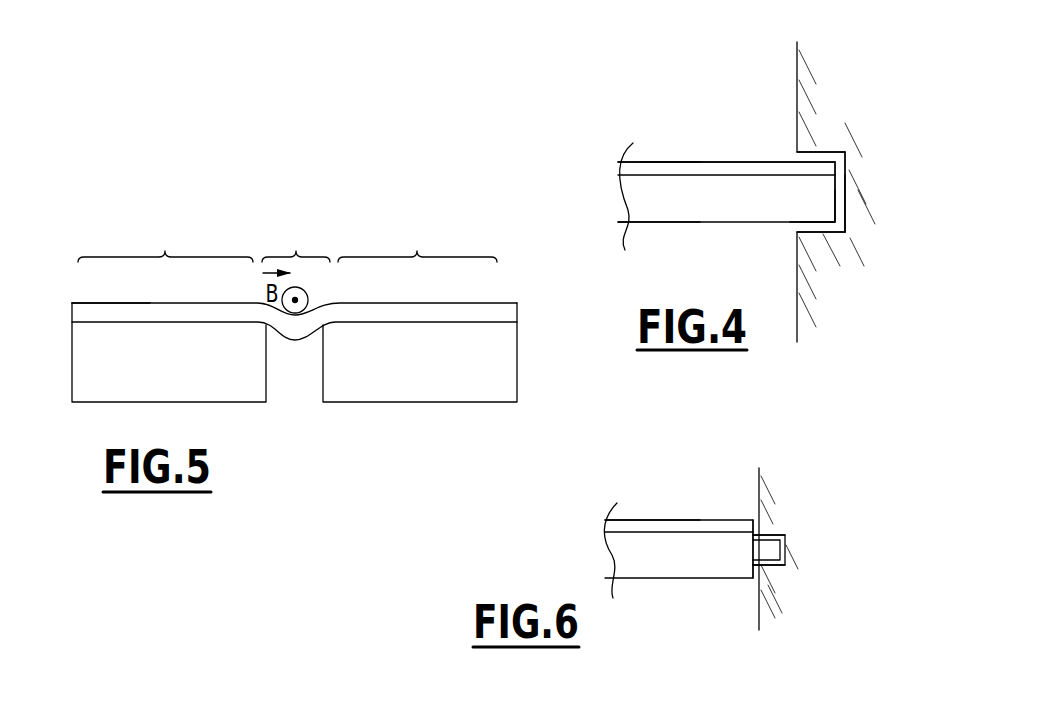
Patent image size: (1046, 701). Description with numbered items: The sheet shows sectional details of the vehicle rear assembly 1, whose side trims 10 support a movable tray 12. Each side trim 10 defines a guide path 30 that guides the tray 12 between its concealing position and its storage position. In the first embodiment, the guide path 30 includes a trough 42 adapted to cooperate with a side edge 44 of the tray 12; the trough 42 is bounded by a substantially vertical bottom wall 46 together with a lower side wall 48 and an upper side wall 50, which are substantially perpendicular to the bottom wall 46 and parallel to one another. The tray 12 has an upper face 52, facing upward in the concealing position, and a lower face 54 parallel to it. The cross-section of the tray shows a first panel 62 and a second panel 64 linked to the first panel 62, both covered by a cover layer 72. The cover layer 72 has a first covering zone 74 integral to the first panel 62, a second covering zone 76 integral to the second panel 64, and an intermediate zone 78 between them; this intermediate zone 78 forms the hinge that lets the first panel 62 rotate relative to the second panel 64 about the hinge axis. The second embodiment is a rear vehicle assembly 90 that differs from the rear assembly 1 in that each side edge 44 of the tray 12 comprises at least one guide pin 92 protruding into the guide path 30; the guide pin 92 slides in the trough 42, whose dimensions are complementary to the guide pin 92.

In FIG. 4, the rear assembly 1 is at (640, 100).
In FIG. 5, the rear assembly 1 is at (88, 232).
In FIG. 4, the side trim 10 is at (810, 88).
In FIG. 6, the side trim 10 is at (765, 498).
In FIG. 4, the tray 12 is at (668, 188).
In FIG. 6, the tray 12 is at (663, 553).
In FIG. 4, the guide path 30 is at (778, 231).
In FIG. 6, the guide path 30 is at (745, 588).
In FIG. 4, the trough 42 is at (848, 173).
In FIG. 6, the trough 42 is at (770, 530).
In FIG. 4, the side edge 44 is at (833, 193).
In FIG. 6, the side edge 44 is at (762, 573).
In FIG. 4, the bottom wall 46 is at (848, 192).
In FIG. 4, the lower side wall 48 is at (834, 233).
In FIG. 4, the upper side wall 50 is at (820, 150).
In FIG. 4, the upper face 52 is at (698, 161).
In FIG. 4, the lower face 54 is at (658, 222).
In FIG. 5, the first panel 62 is at (158, 360).
In FIG. 5, the second panel 64 is at (463, 363).
In FIG. 5, the cover layer 72 is at (463, 315).
In FIG. 5, the first covering zone 74 is at (165, 242).
In FIG. 5, the second covering zone 76 is at (417, 242).
In FIG. 5, the intermediate zone 78 is at (296, 268).
In FIG. 6, the rear vehicle assembly 90 is at (648, 493).
In FIG. 6, the guide pin 92 is at (775, 546).